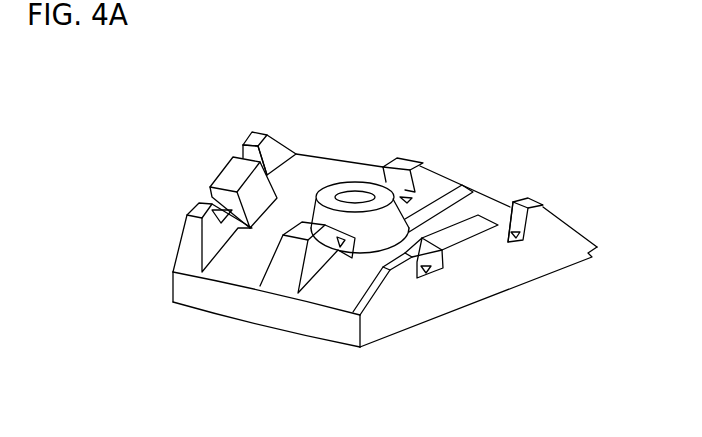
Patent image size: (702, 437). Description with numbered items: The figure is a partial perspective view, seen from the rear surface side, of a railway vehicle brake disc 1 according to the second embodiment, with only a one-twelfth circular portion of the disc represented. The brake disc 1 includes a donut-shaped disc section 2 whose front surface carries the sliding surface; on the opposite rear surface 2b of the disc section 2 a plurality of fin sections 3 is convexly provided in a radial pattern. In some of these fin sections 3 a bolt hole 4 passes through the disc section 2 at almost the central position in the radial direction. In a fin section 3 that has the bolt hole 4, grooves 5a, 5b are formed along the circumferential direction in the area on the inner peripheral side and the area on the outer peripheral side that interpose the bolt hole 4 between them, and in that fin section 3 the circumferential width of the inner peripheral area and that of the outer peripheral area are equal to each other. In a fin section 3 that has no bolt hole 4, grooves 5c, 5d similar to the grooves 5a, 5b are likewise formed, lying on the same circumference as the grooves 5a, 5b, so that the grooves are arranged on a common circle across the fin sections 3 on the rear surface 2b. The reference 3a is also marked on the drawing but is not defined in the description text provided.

The brake disc 1 is at (224, 124).
The disc section 2 is at (317, 156).
The rear surface 2b is at (300, 157).
The fin section 3 is at (282, 144).
The edge projection 3a is at (257, 131).
The bolt hole 4 is at (361, 192).
The groove 5a is at (350, 250).
The groove 5b is at (413, 199).
The groove 5c is at (210, 188).
The groove 5d is at (243, 148).